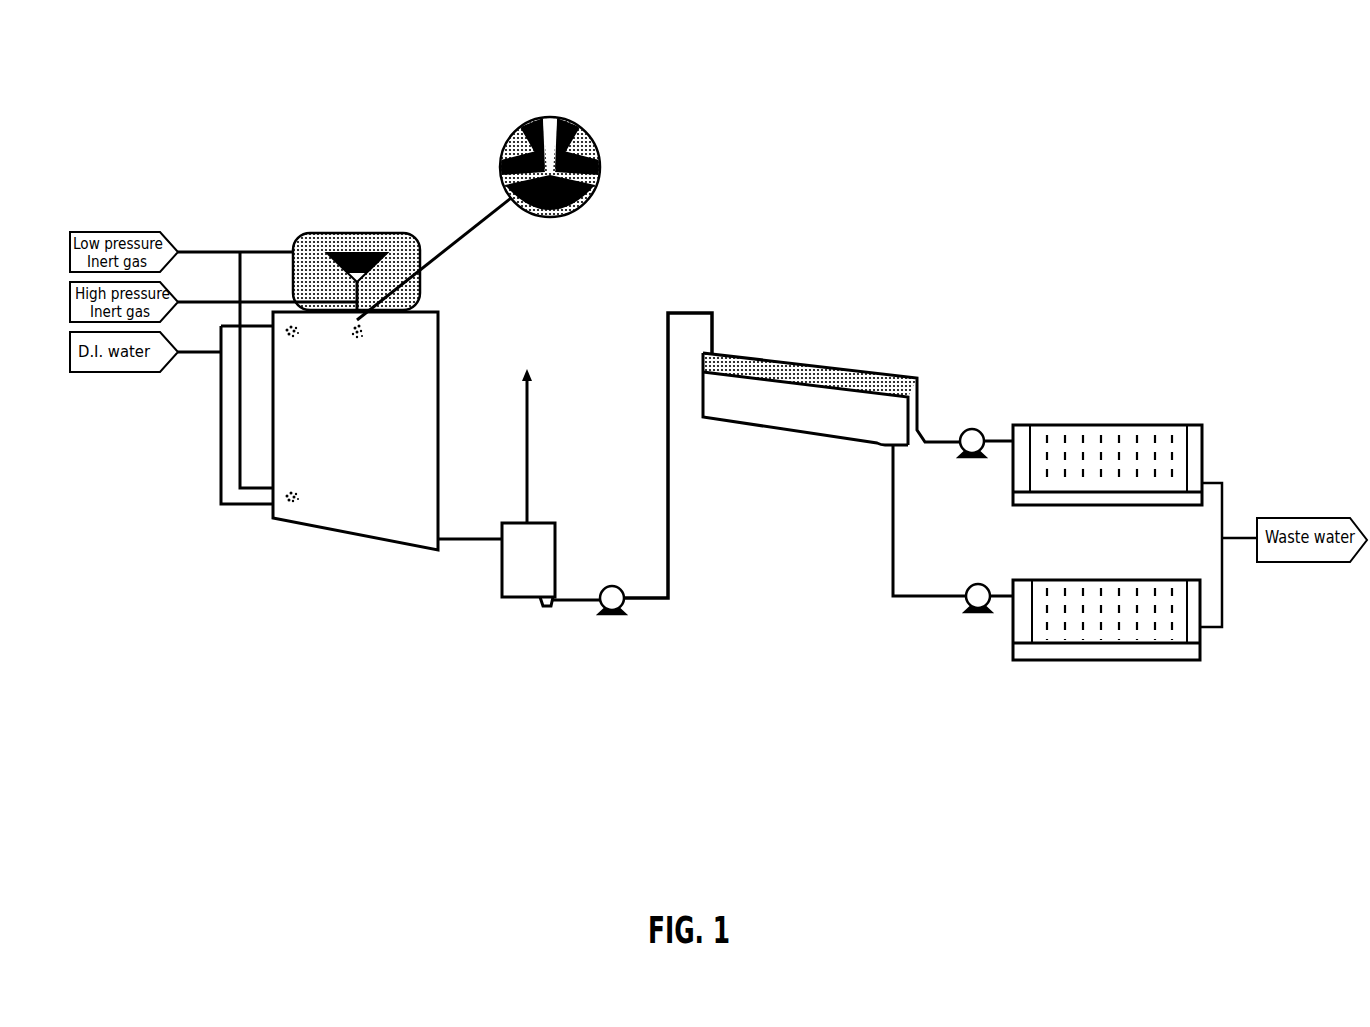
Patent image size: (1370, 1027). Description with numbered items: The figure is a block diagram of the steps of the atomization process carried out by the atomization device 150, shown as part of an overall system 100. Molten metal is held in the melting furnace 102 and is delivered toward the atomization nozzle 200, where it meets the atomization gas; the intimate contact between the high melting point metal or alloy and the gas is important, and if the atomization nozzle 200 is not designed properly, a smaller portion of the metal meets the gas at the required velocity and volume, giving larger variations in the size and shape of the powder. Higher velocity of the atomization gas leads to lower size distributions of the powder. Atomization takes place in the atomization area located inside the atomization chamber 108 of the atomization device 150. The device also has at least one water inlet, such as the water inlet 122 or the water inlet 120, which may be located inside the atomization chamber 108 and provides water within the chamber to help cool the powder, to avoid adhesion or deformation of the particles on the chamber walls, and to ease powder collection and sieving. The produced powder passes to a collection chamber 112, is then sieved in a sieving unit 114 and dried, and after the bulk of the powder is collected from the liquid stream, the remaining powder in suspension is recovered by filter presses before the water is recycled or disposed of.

The metal powder production system 100 is at (1170, 148).
The atomization device 150 is at (210, 70).
The melting furnace 102 is at (335, 232).
The atomization chamber 108 is at (273, 518).
The collection chamber 112 is at (502, 578).
The sieving unit 114 is at (907, 375).
The water inlet 120 is at (284, 331).
The water inlet 122 is at (280, 497).
The atomization nozzle 200 is at (597, 135).